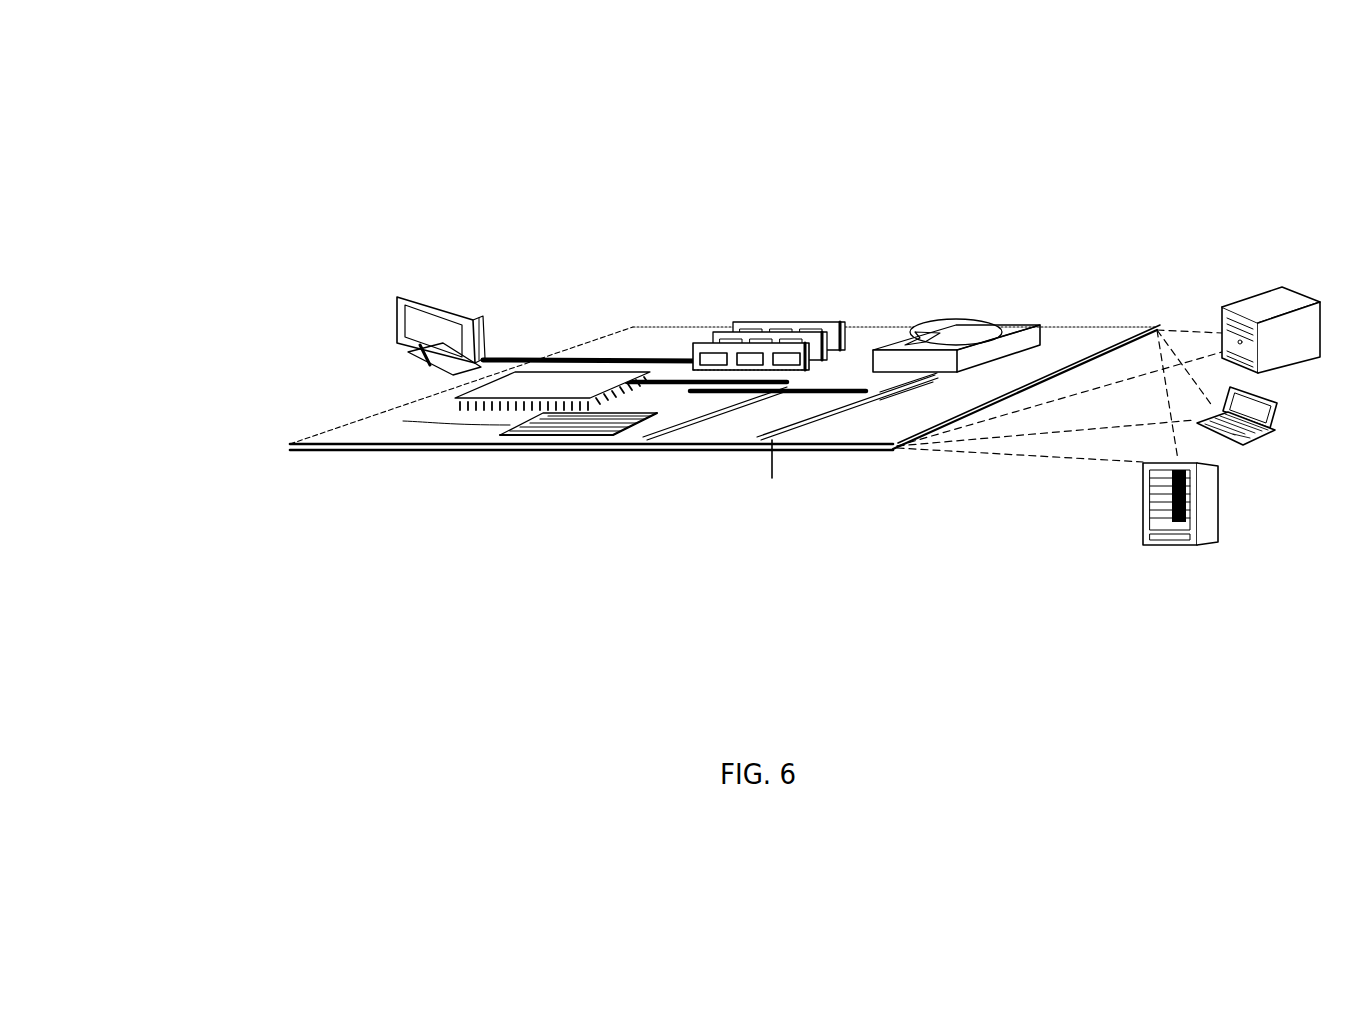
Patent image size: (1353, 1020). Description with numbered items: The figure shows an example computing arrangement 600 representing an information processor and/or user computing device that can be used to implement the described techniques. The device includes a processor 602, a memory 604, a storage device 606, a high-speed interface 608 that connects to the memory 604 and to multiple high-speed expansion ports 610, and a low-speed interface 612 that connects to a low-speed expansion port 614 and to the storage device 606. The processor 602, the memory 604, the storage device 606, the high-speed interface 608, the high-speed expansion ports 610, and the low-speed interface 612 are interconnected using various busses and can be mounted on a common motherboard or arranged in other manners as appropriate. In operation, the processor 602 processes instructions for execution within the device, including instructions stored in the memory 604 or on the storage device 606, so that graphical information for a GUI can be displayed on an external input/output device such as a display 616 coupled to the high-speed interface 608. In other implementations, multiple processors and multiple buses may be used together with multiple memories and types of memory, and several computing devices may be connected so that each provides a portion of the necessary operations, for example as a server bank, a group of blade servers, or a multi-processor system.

The computing system 600 is at (182, 199).
The processor 602 is at (417, 392).
The memory 604 is at (749, 322).
The storage device 606 is at (943, 325).
The high-speed interface 608 is at (660, 360).
The high-speed expansion ports 610 is at (396, 423).
The low-speed interface 612 is at (866, 390).
The low-speed expansion port 614 is at (815, 455).
The display 616 is at (393, 296).